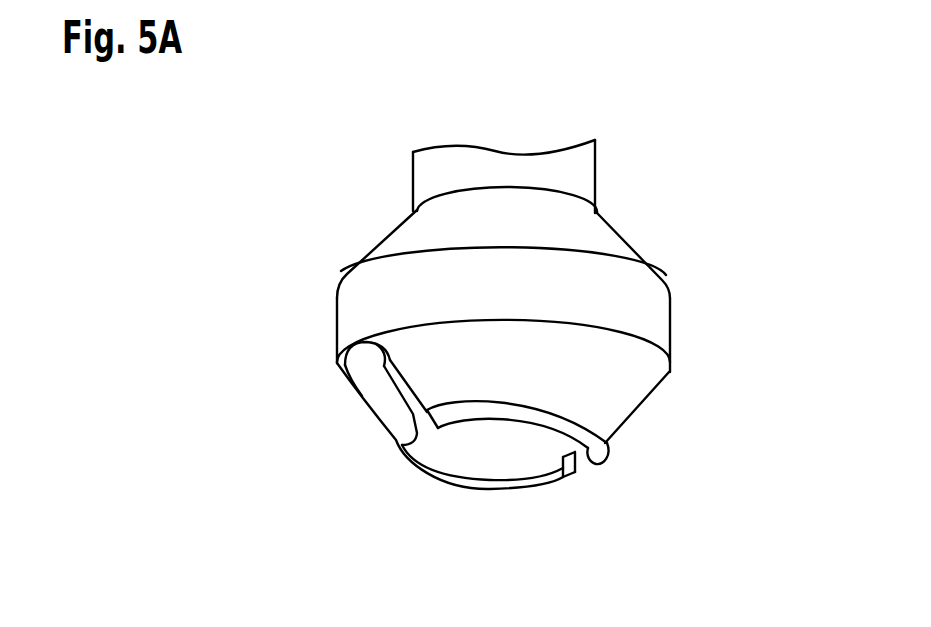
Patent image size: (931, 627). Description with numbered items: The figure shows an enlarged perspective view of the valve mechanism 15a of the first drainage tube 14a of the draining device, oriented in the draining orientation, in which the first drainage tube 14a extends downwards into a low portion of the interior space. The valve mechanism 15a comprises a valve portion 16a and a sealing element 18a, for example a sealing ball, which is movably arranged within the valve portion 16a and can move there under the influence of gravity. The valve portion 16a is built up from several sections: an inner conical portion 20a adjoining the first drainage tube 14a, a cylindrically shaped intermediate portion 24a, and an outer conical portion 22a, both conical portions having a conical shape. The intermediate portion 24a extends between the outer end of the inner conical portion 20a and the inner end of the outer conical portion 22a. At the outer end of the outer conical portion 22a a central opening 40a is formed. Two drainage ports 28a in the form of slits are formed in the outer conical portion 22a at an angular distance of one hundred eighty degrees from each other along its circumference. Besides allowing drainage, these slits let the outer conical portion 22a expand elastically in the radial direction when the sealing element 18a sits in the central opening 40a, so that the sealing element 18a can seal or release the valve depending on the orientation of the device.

The first drainage tube 14a is at (513, 172).
The valve mechanism 15a is at (707, 230).
The valve portion 16a is at (708, 308).
The sealing element 18a is at (468, 450).
The inner conical portion 20a is at (415, 237).
The outer conical portion 22a is at (627, 403).
The intermediate portion 24a is at (358, 318).
The drainage port 28a is at (395, 380).
The central opening 40a is at (495, 505).